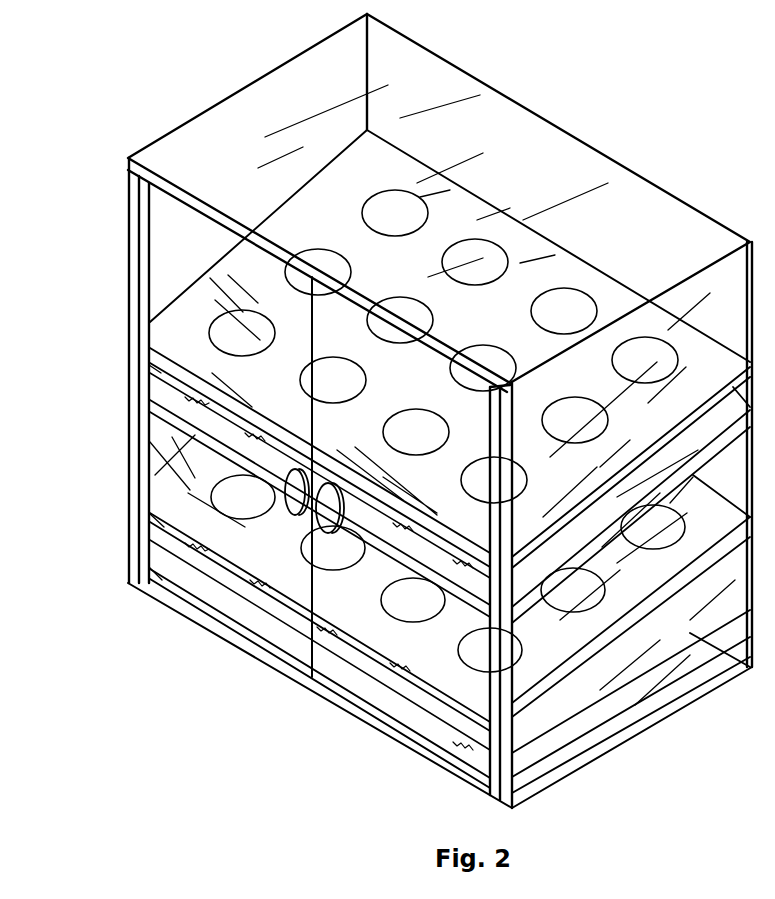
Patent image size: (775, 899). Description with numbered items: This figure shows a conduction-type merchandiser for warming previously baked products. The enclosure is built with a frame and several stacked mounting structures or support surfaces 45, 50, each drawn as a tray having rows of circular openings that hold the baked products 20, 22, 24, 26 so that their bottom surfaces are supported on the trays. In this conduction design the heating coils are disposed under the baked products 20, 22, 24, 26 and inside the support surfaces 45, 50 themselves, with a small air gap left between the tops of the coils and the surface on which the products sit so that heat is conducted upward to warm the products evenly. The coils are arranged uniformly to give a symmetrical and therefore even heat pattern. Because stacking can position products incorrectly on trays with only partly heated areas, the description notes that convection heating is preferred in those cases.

The baked product 20 is at (246, 338).
The baked product 22 is at (336, 560).
The baked product 24 is at (400, 597).
The baked product 26 is at (482, 648).
The support surface 45 is at (190, 333).
The support surface 50 is at (185, 490).